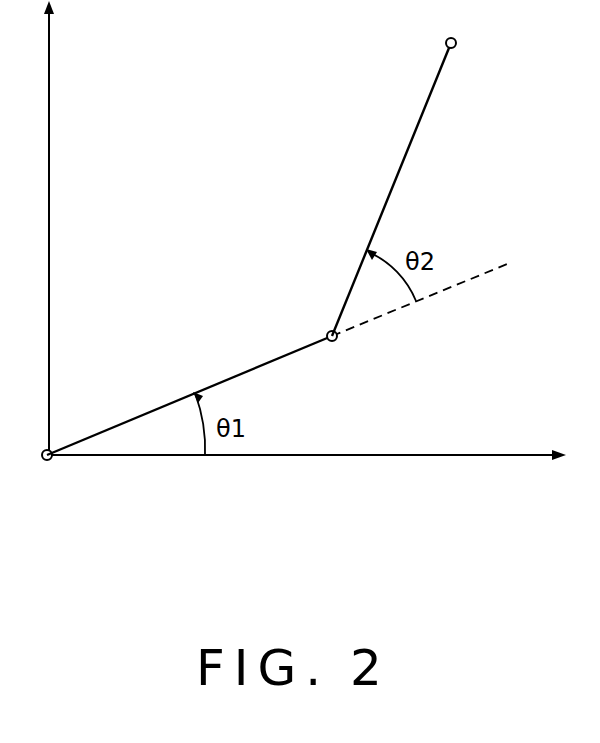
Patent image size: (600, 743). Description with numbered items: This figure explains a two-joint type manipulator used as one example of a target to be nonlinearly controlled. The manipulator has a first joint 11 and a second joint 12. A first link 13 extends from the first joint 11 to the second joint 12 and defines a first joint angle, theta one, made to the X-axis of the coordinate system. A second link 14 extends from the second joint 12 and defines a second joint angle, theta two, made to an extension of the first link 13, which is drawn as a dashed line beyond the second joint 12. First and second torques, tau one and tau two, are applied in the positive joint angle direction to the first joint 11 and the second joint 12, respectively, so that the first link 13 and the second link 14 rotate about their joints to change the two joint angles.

The first joint 11 is at (52, 447).
The second joint 12 is at (327, 333).
The first link 13 is at (170, 400).
The second link 14 is at (378, 215).